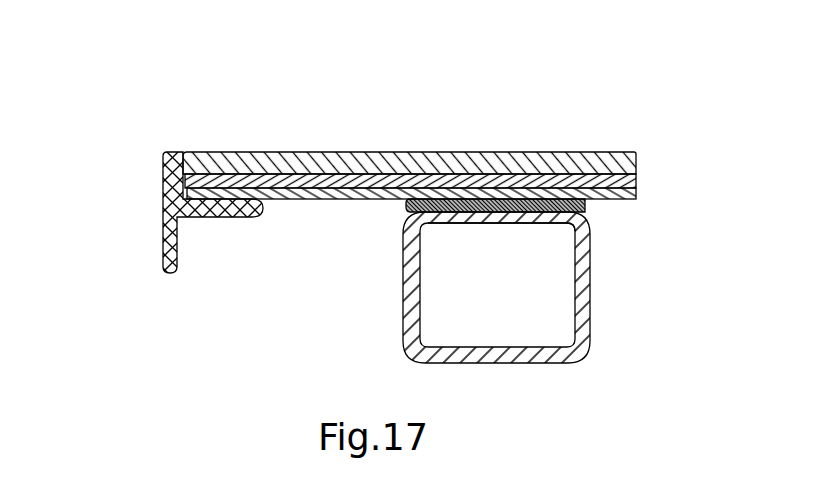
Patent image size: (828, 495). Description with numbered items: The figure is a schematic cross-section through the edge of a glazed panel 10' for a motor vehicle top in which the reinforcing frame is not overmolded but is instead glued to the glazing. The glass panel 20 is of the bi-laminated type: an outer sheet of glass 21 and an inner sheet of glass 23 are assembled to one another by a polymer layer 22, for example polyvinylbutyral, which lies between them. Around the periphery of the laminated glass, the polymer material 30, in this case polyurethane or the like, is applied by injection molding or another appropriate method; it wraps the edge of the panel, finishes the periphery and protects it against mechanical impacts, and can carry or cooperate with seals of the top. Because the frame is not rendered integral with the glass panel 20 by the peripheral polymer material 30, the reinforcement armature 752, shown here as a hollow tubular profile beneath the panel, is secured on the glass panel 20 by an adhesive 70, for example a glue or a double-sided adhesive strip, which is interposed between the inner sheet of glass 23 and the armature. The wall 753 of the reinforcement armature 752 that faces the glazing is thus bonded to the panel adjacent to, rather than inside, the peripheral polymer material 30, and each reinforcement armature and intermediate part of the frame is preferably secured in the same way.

The glazing assembly 10' is at (392, 207).
The glass panel 20 is at (342, 140).
The outer sheet of glass 21 is at (388, 152).
The polymer layer 22 is at (467, 174).
The inner sheet of glass 23 is at (537, 192).
The polymer material 30 is at (163, 210).
The adhesive 70 is at (600, 208).
The reinforcement armature 752 is at (602, 320).
The upper wall of tubular member 753 is at (512, 233).